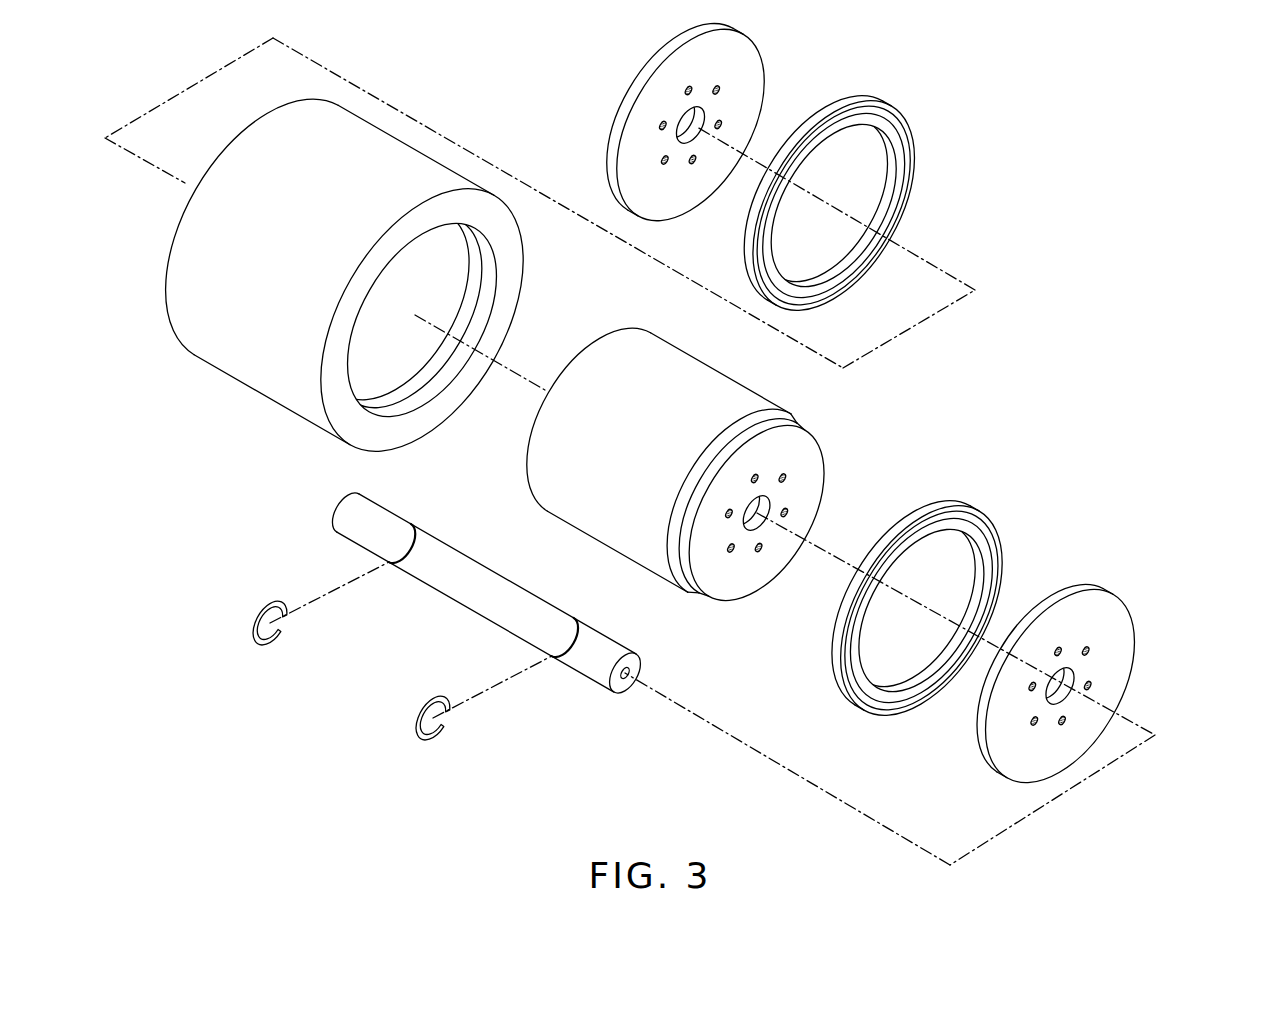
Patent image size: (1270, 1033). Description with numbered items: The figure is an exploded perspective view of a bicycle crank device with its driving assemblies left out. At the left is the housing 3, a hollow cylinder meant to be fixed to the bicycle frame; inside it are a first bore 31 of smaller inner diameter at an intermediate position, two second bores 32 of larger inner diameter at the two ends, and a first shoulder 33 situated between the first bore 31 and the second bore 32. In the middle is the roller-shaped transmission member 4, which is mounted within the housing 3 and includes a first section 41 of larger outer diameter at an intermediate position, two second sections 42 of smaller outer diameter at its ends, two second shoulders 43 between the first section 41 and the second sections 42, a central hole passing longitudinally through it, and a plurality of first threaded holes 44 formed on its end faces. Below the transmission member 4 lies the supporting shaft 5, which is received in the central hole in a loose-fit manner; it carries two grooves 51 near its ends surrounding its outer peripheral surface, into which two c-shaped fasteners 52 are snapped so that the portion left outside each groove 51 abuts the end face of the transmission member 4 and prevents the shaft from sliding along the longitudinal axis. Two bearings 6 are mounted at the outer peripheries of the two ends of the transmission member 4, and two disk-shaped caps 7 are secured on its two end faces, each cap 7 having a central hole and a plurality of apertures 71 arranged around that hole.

The housing 3 is at (372, 292).
The first bore 31 is at (408, 368).
The second bores 32 is at (487, 303).
The first shoulder 33 is at (470, 318).
The transmission member 4 is at (730, 500).
The first section 41 is at (755, 393).
The second sections 42 is at (688, 510).
The second shoulders 43 is at (713, 447).
The first threaded holes 44 is at (784, 478).
The supporting shaft 5 is at (441, 595).
The grooves 51 is at (388, 551).
The fasteners 52 is at (258, 648).
The bearings 6 is at (915, 215).
The caps 7 is at (763, 53).
The apertures 71 is at (1090, 690).